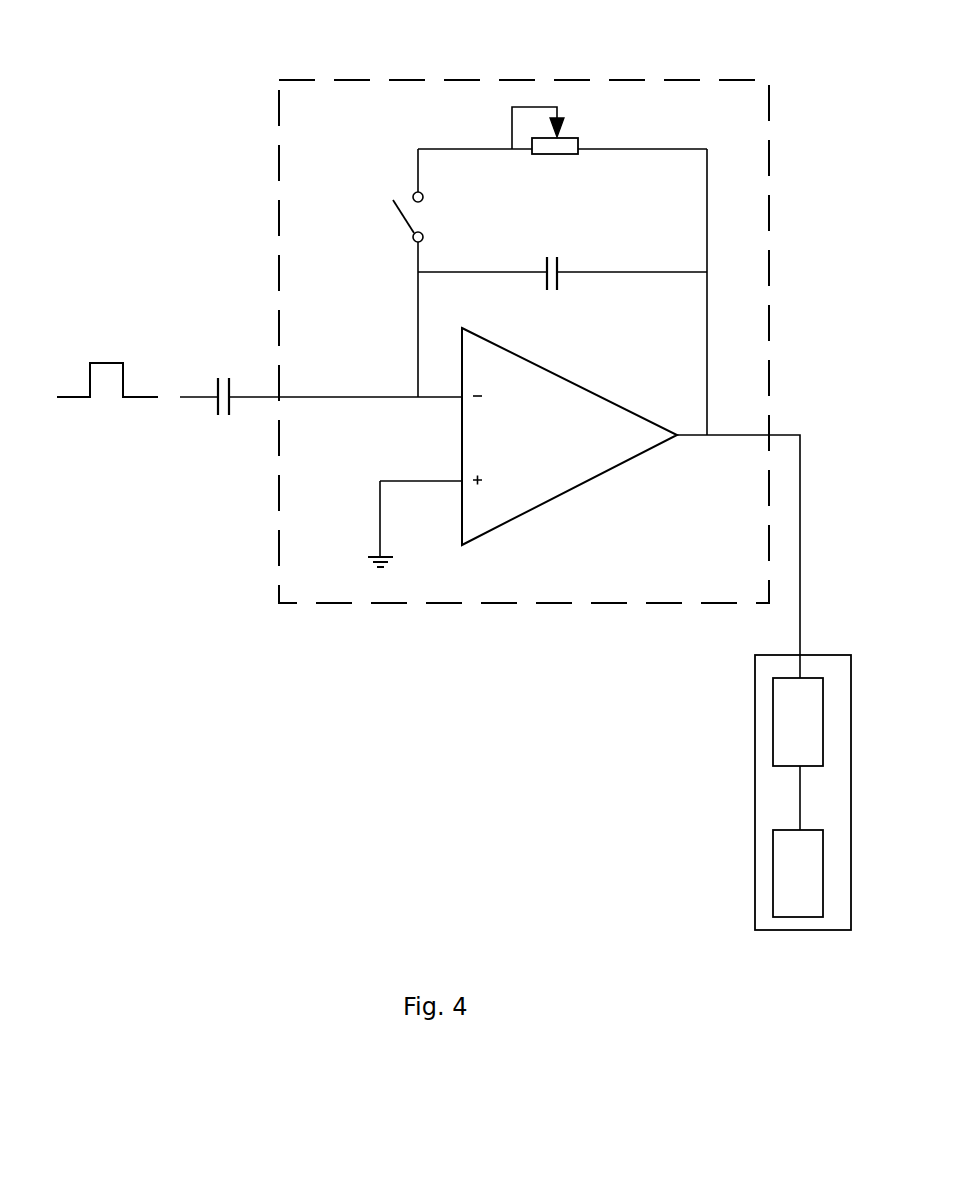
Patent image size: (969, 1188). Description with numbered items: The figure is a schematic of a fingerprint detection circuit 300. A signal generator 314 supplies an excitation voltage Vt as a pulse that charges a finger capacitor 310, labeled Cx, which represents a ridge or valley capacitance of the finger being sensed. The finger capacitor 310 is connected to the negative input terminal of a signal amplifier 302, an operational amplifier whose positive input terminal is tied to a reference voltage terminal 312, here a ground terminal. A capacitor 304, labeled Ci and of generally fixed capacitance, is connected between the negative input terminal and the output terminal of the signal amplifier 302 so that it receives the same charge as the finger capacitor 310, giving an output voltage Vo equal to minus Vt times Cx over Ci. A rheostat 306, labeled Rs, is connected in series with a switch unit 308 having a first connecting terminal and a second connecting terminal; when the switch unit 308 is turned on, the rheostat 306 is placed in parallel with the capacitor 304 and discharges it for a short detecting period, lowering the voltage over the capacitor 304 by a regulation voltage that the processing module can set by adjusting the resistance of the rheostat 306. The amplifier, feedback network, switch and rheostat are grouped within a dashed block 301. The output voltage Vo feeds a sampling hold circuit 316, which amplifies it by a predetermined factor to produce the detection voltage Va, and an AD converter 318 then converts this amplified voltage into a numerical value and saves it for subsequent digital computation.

The fingerprint detection circuit 300 is at (72, 70).
The integrator circuit block 301 is at (279, 177).
The signal amplifier 302 is at (580, 487).
The capacitor 304 is at (560, 282).
The rheostat 306 is at (572, 133).
The switch unit 308 is at (373, 202).
The finger capacitor 310 is at (222, 427).
The reference voltage terminal 312 is at (370, 549).
The signal generator 314 is at (120, 350).
The sampling hold circuit 316 is at (773, 725).
The AD converter 318 is at (773, 853).